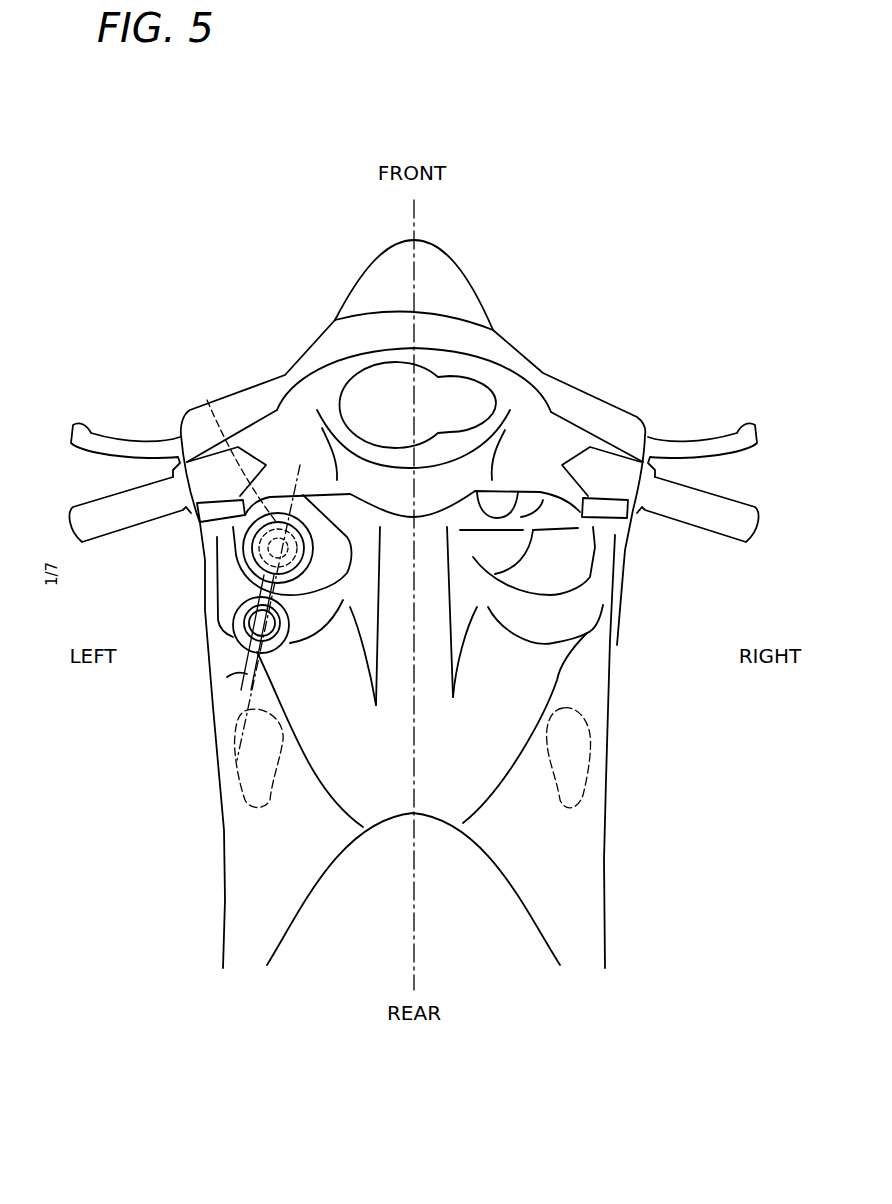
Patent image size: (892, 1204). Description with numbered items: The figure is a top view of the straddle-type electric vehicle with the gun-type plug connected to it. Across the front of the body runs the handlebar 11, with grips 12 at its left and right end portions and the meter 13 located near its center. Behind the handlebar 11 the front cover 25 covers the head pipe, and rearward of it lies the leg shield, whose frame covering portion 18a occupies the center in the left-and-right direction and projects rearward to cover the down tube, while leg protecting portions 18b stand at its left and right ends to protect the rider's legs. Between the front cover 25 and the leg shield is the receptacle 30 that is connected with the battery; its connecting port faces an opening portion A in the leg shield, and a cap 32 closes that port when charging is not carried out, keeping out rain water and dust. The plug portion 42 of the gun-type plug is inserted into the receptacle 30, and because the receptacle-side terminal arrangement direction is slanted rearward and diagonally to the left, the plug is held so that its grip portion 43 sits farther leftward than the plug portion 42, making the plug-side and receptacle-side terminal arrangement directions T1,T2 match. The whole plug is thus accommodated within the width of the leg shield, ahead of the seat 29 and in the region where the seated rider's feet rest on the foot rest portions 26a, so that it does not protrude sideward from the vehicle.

The handlebar 11 is at (617, 460).
The grips 12 is at (737, 500).
The meter 13 is at (467, 393).
The frame covering portion 18a is at (433, 667).
The leg protecting portions 18b is at (226, 563).
The front cover 25 is at (587, 387).
The foot rest portions 26a is at (257, 753).
The seat 29 is at (315, 915).
The receptacle 30 is at (205, 399).
The cap 32 is at (225, 646).
The plug portion 42 is at (232, 540).
The grip portion 43 is at (223, 620).
The opening portion A is at (250, 579).
The receptacle-side and plug-side terminal arrangement directions T1,T2 is at (207, 688).